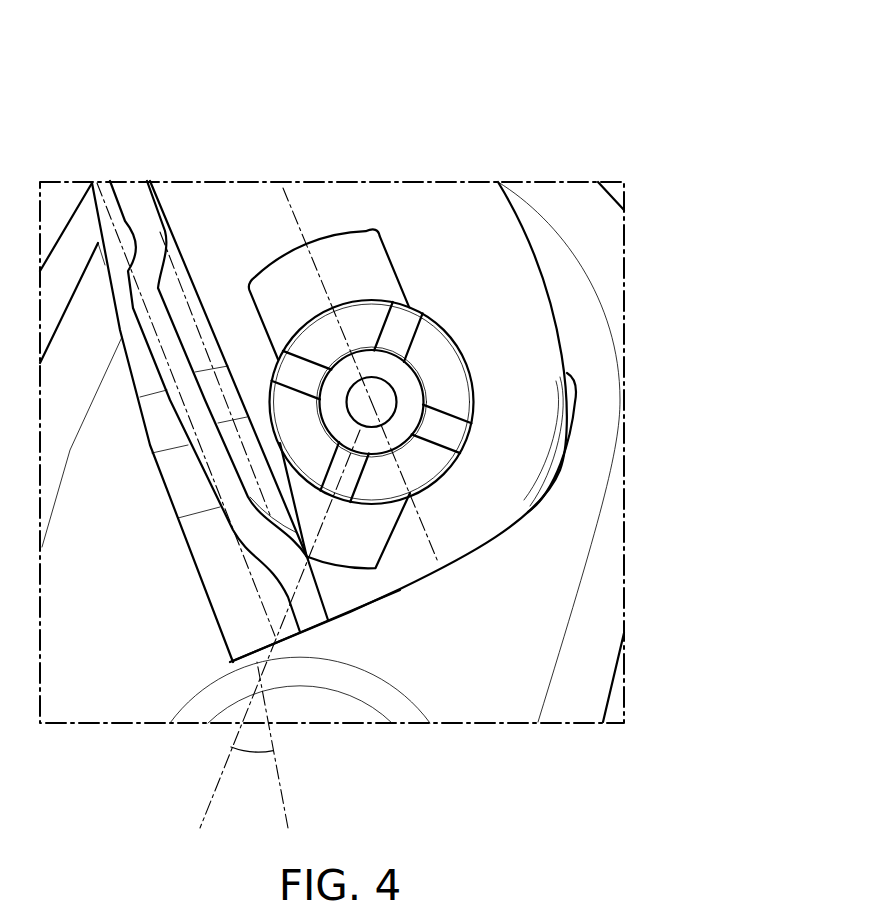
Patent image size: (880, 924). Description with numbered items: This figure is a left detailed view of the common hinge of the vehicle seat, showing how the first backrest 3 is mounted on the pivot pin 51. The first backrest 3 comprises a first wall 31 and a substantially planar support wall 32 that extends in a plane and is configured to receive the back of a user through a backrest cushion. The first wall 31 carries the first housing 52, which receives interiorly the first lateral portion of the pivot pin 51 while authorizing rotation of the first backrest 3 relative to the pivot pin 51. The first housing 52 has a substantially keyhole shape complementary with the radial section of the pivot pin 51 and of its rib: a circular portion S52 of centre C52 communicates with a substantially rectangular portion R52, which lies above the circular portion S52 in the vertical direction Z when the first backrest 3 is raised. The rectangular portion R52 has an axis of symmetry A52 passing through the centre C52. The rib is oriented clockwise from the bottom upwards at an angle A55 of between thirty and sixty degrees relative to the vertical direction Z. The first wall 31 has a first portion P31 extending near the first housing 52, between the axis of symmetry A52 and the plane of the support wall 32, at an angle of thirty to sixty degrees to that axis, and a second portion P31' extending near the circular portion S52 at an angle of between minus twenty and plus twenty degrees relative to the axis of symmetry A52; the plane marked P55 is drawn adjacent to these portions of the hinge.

The first backrest 3 is at (247, 122).
The first wall 31 is at (435, 98).
The support wall 32 is at (213, 593).
The pivot pin 51 is at (476, 328).
The first housing 52 is at (407, 272).
The substantially rectangular portion R52 is at (350, 243).
The circular portion S52 is at (447, 487).
The centre of the circular portion C52 is at (380, 398).
The axis of symmetry A52 is at (286, 206).
The first portion P31 is at (327, 691).
The second portion P31' is at (466, 520).
The lower shroud plane P55 is at (347, 583).
The angle A55 is at (280, 629).
The vertical direction Z is at (282, 745).